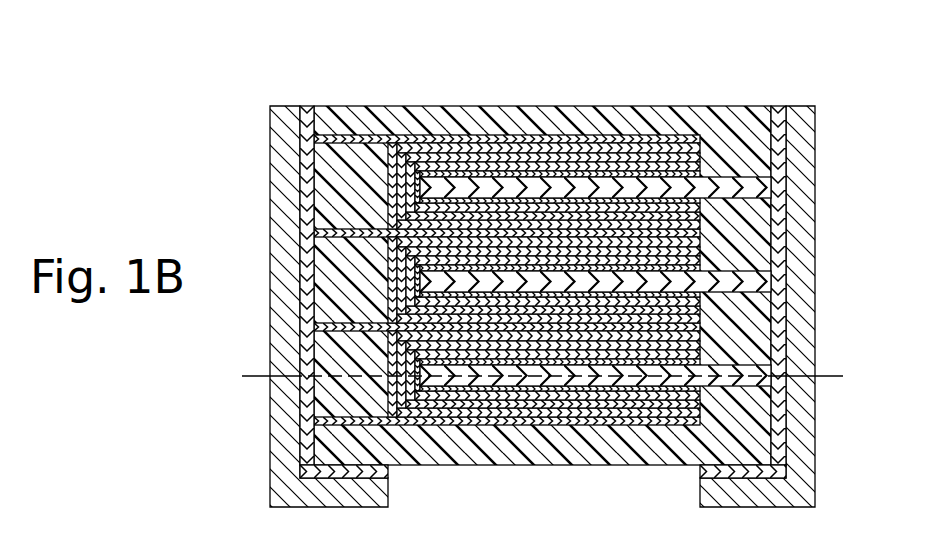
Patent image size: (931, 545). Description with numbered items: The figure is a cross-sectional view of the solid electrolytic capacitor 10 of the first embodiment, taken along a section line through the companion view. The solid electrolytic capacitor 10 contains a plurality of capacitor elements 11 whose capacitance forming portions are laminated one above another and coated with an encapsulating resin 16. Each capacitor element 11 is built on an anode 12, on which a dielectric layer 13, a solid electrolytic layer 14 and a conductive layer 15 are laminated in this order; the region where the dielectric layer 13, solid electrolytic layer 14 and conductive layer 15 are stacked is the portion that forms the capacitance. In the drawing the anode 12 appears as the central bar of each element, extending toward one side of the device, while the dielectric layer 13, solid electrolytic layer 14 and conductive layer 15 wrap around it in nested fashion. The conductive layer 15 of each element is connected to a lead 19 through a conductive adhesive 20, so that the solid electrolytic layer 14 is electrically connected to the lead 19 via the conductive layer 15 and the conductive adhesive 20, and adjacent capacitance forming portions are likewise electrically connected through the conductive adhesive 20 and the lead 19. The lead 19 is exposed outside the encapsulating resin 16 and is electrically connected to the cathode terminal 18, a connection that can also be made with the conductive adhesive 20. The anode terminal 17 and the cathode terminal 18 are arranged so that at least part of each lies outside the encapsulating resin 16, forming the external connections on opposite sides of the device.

The solid electrolytic capacitor 10 is at (252, 91).
The capacitor element 11 is at (584, 210).
The anode 12 is at (438, 57).
The dielectric layer 13 is at (508, 180).
The solid electrolytic layer 14 is at (474, 172).
The conductive layer 15 is at (443, 160).
The encapsulating resin 16 is at (671, 110).
The anode terminal 17 is at (812, 282).
The cathode terminal 18 is at (273, 282).
The lead 19 is at (373, 138).
The conductive adhesive 20 is at (306, 107).